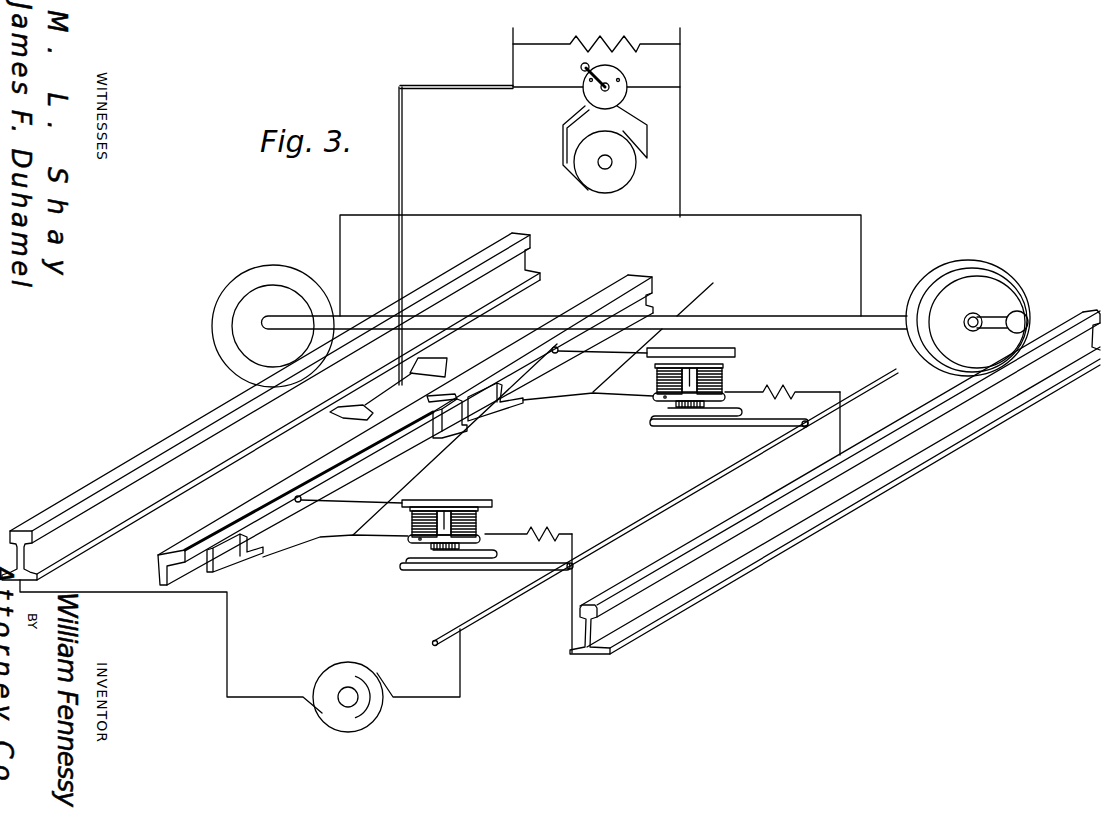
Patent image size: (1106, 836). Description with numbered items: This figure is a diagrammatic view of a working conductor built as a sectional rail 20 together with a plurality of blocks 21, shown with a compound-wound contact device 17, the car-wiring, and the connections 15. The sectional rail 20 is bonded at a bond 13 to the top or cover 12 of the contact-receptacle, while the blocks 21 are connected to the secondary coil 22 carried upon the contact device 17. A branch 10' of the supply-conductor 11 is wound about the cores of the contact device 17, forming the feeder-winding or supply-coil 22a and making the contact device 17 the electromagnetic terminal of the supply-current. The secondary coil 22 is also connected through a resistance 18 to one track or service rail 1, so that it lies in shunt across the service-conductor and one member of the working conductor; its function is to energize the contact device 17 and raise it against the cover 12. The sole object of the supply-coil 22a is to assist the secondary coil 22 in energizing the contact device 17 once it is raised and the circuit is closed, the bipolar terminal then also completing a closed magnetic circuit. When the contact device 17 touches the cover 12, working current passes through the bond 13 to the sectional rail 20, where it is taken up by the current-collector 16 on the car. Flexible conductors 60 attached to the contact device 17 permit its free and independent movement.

The track or service rail 1 is at (719, 600).
The branch of the supply-conductor 10' is at (604, 503).
The supply-conductor 11 is at (673, 503).
The top or cover of the contact-receptacle 12 is at (437, 498).
The bond 13 is at (471, 418).
The circuit wire 15 is at (840, 428).
The current-collector 16 is at (352, 424).
The contact device 17 is at (710, 375).
The resistance 18 is at (662, 473).
The sectional rail 20 is at (290, 480).
The blocks 21 is at (240, 543).
The secondary coil 22 is at (655, 383).
The feeder-winding or supply-coil 22a is at (485, 533).
The flexible conductors 60 is at (564, 498).